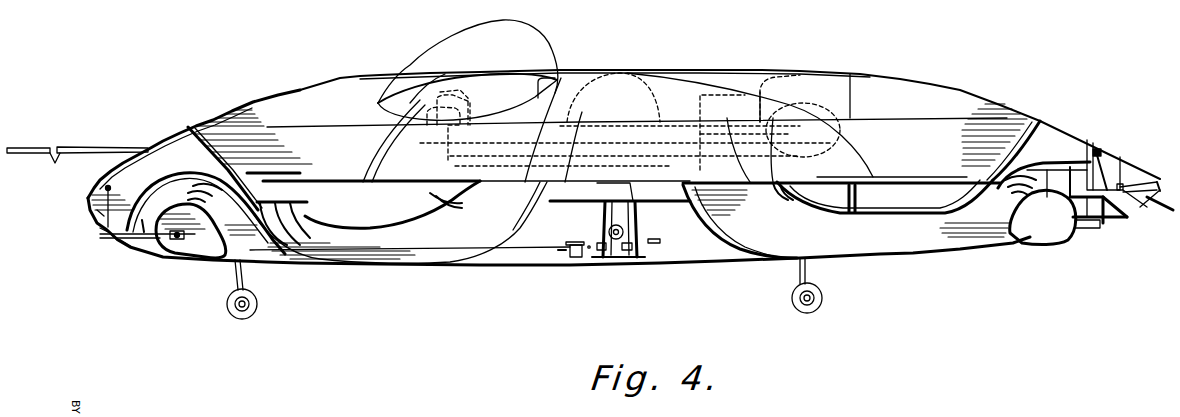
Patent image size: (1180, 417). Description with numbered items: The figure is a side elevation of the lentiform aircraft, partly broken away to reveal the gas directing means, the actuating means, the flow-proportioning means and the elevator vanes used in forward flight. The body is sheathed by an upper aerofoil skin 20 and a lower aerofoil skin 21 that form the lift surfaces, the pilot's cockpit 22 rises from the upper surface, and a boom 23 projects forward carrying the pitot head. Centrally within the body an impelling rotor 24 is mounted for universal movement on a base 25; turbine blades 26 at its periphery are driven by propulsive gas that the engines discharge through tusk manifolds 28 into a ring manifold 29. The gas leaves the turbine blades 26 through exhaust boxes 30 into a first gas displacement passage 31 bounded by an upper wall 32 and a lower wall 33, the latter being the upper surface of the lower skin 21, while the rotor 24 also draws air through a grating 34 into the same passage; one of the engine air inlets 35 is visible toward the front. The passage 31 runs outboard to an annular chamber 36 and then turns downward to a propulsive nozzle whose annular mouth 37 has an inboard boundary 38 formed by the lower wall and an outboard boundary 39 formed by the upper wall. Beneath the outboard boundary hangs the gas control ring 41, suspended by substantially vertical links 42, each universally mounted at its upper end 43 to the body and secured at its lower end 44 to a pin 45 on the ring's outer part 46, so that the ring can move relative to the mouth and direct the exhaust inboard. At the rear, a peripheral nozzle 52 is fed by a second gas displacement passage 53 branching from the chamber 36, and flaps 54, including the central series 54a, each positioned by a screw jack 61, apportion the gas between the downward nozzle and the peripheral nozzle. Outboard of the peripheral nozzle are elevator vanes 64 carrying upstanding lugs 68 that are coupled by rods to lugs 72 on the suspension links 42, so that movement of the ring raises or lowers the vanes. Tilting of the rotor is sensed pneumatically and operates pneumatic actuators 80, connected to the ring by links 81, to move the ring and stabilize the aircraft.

The upper aerofoil skin 20 is at (878, 72).
The lower aerofoil skin 21 is at (913, 255).
The cockpit 22 is at (443, 47).
The boom 23 is at (77, 167).
The impelling rotor 24 is at (610, 135).
The base 25 is at (612, 258).
The turbine blades 26 is at (782, 152).
The tusk manifolds 28 is at (440, 120).
The ring manifold 29 is at (457, 135).
The exhaust boxes 30 is at (435, 197).
The first gas displacement passage 31 is at (413, 255).
The upper wall 32 is at (878, 207).
The lower wall 33 is at (827, 253).
The grating 34 is at (733, 125).
The air inlet 35 is at (293, 202).
The annular chamber 36 is at (177, 190).
The annular mouth 37 is at (147, 220).
The inboard boundary 38 is at (160, 250).
The outboard boundary 39 is at (143, 226).
The gas control ring 41 is at (115, 240).
The links 42 is at (103, 215).
The upper end 43 is at (103, 189).
The lower end 44 is at (110, 238).
The pin 45 is at (105, 234).
The outer part 46 is at (127, 244).
The peripheral nozzle 52 is at (1147, 187).
The second gas displacement passage 53 is at (1107, 180).
The flaps 54 is at (1070, 167).
The central series of flaps 54a is at (1047, 170).
The screw jack 61 is at (1093, 150).
The elevator vanes 64 is at (1163, 208).
The upstanding lugs 68 is at (1160, 190).
The lugs 72 is at (1133, 178).
The pneumatic actuators 80 is at (577, 257).
The links 81 is at (513, 250).